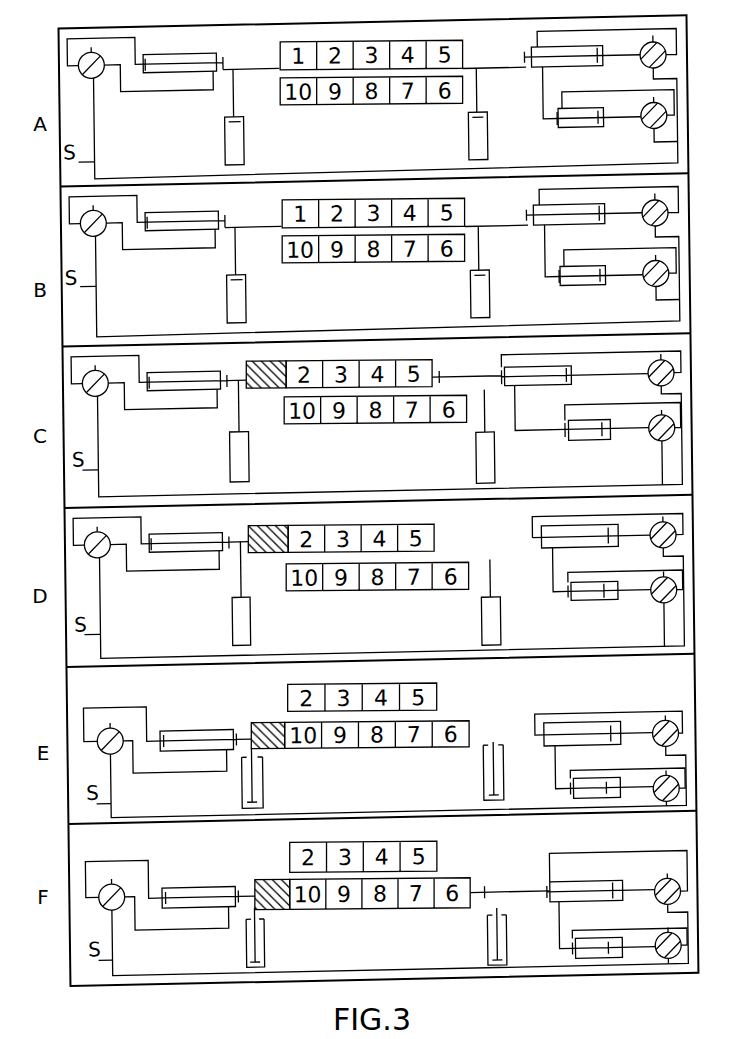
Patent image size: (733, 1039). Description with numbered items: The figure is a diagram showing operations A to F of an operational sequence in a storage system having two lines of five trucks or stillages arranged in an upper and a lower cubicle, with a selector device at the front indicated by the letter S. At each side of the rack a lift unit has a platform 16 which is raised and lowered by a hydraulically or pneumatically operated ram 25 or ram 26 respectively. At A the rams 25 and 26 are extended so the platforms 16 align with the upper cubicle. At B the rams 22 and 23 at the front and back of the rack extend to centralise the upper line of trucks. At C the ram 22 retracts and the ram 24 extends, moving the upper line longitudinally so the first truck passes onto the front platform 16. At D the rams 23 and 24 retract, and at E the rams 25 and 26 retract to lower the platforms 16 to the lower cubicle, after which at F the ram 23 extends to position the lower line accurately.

The platform 16 is at (446, 51).
The ram 22 is at (152, 28).
The ram 23 is at (474, 29).
The ram 24 is at (600, 209).
The ram 25 is at (165, 114).
The ram 26 is at (408, 116).